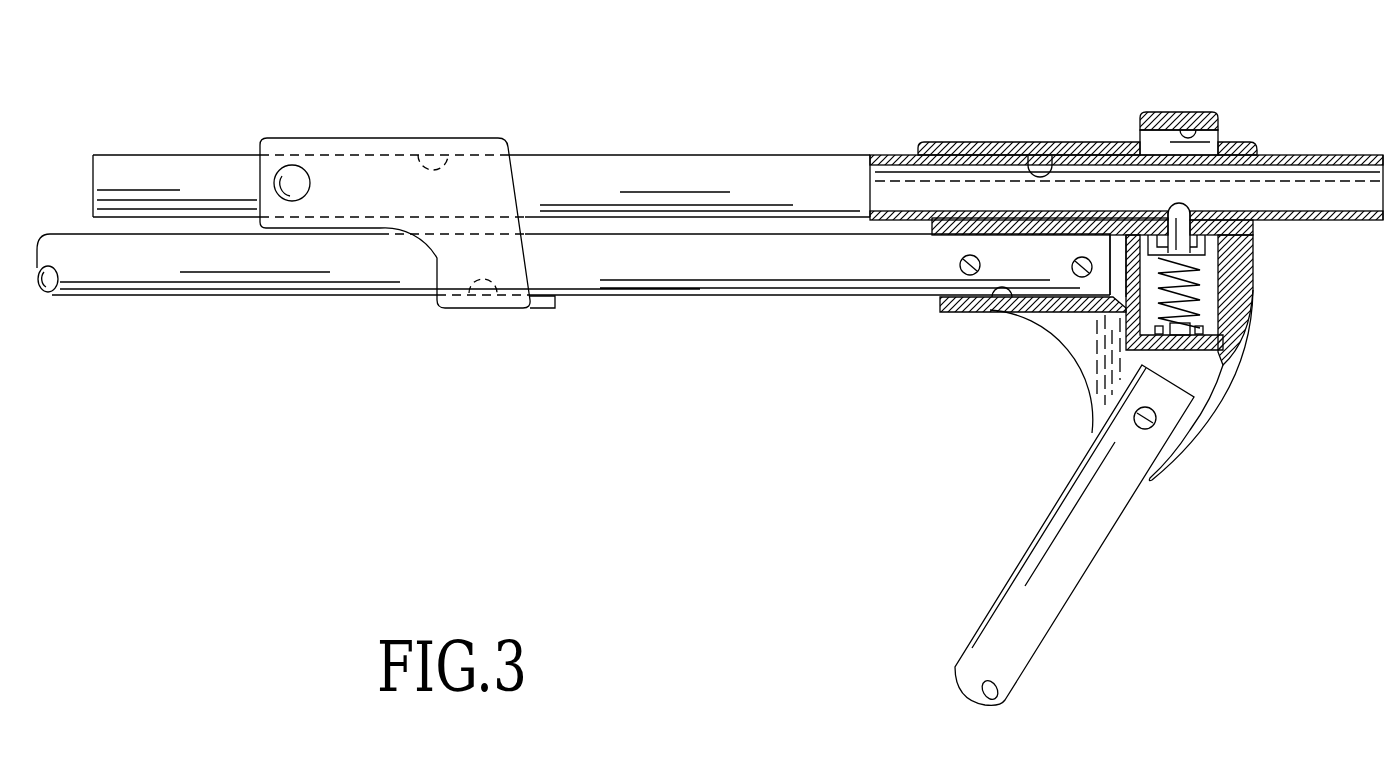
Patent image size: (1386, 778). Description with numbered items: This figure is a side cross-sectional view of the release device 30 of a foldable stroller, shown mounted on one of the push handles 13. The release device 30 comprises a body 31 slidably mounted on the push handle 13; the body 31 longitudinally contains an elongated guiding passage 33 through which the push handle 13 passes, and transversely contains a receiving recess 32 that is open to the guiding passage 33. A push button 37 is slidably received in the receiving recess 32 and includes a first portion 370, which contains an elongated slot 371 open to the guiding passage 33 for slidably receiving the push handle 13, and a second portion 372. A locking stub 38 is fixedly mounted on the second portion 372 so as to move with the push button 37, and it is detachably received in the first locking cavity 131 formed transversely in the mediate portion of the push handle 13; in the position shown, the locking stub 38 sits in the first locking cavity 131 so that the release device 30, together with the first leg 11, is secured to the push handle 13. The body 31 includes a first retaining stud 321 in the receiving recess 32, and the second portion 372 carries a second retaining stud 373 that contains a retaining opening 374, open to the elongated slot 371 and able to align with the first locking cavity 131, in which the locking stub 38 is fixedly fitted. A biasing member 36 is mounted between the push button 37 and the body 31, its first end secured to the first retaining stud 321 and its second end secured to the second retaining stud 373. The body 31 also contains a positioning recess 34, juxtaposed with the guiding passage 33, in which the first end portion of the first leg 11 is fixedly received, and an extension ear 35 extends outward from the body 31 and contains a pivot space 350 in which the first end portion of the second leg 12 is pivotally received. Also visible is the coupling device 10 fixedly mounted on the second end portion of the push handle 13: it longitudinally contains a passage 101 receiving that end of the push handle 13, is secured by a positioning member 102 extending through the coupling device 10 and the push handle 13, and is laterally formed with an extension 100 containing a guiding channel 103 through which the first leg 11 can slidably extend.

The coupling device 10 is at (407, 202).
The extension 100 is at (443, 258).
The passage 101 is at (448, 153).
The positioning member 102 is at (292, 178).
The guiding channel 103 is at (495, 300).
The first leg 11 is at (733, 290).
The second leg 12 is at (1075, 568).
The push handle 13 is at (708, 165).
The first locking cavity 131 is at (1172, 205).
The release device 30 is at (1035, 107).
The body 31 is at (976, 150).
The receiving recess 32 is at (1213, 295).
The first retaining stud 321 is at (1192, 338).
The elongated guiding passage 33 is at (1050, 162).
The positioning recess 34 is at (1000, 296).
The extension ear 35 is at (1200, 440).
The pivot space 350 is at (1092, 377).
The biasing member 36 is at (1195, 305).
The push button 37 is at (1194, 79).
The first portion 370 is at (1147, 112).
The elongated slot 371 is at (1190, 132).
The second portion 372 is at (1113, 312).
The second retaining stud 373 is at (1197, 244).
The retaining opening 374 is at (1197, 258).
The locking stub 38 is at (1186, 210).